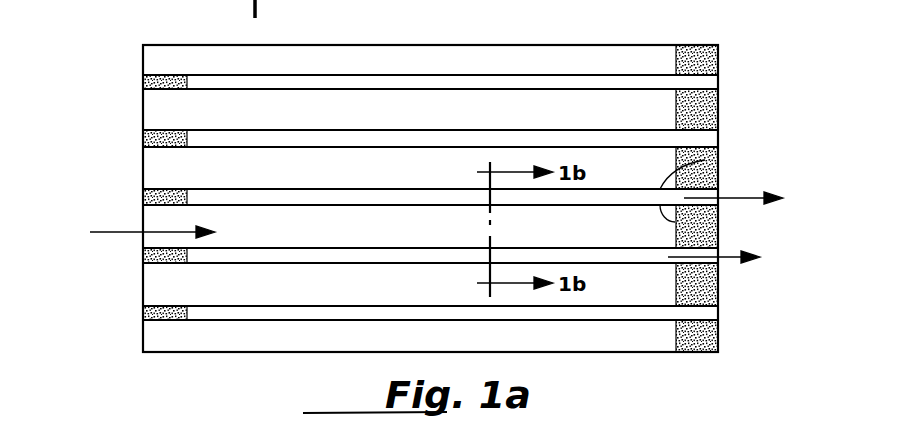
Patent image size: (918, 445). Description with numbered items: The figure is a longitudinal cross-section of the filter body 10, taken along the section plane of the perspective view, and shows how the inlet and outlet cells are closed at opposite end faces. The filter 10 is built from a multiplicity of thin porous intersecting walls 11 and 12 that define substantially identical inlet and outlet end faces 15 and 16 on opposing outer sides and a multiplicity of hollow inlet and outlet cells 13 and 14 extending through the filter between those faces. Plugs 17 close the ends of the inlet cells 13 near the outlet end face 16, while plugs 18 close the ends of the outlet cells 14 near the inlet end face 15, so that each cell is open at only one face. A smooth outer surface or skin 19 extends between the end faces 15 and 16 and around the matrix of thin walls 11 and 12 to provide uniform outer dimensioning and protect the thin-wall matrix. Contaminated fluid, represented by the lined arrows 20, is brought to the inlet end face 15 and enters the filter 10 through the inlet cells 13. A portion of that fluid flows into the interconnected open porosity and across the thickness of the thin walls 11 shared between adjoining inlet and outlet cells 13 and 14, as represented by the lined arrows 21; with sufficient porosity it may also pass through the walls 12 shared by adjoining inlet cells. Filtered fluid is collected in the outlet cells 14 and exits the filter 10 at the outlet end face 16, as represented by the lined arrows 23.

The filter body 10 is at (428, 41).
The thin porous intersecting walls 11 is at (692, 221).
The thin porous intersecting walls 12 is at (316, 70).
The inlet cells 13 is at (145, 118).
The outlet cells 14 is at (718, 83).
The inlet end face 15 is at (135, 68).
The outlet end face 16 is at (728, 60).
The plugs 17 is at (718, 238).
The plugs 18 is at (143, 262).
The outer surface or skin 19 is at (545, 45).
The contaminated fluid arrows 20 is at (108, 232).
The fluid flow arrows across thin walls 21 is at (462, 258).
The filtered fluid exit arrows 23 is at (770, 200).